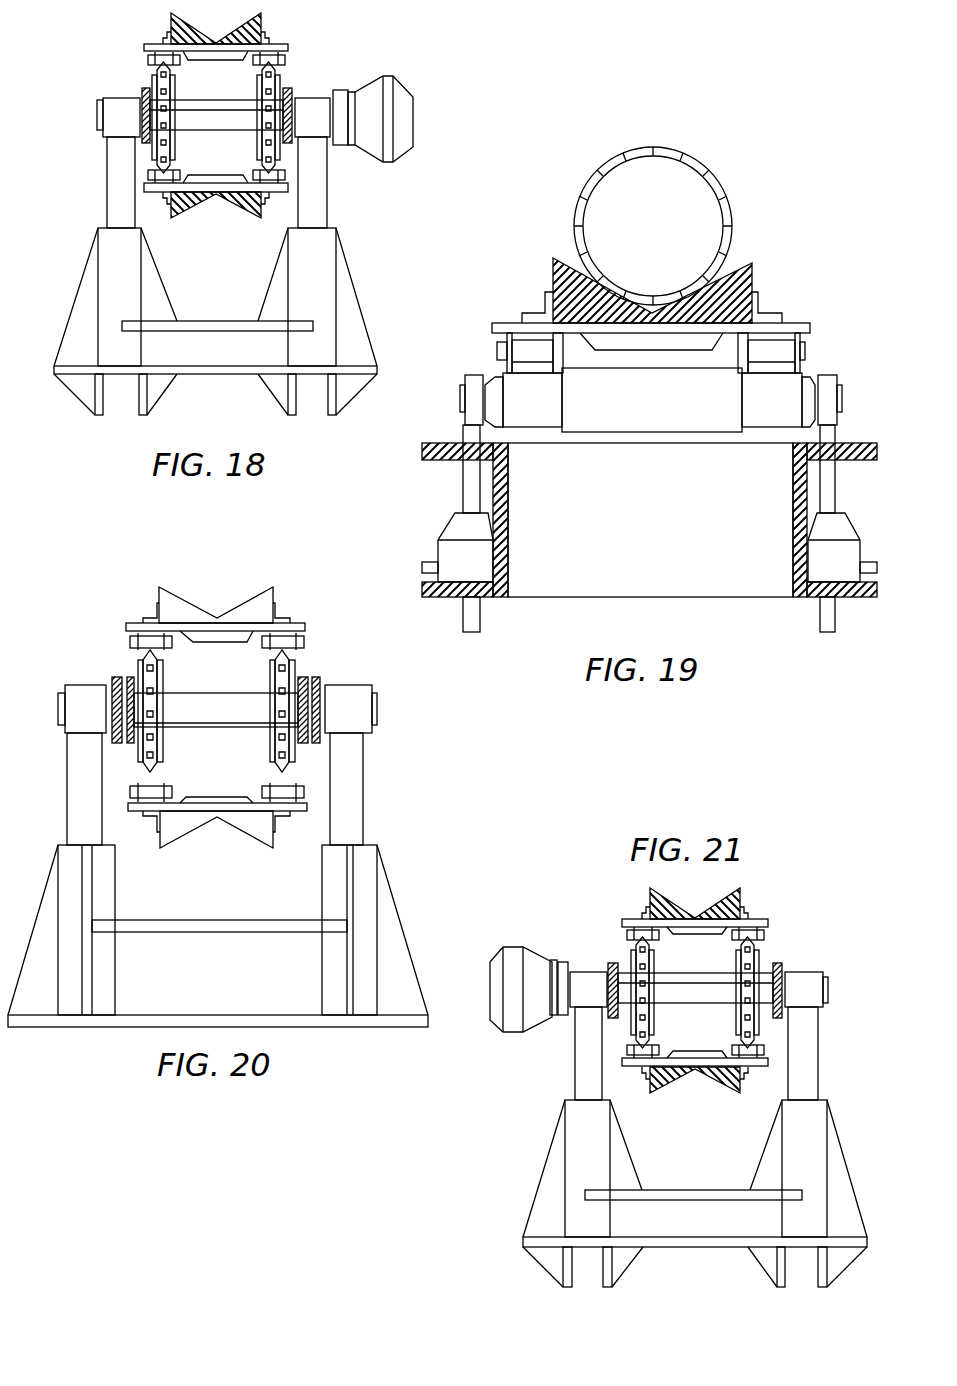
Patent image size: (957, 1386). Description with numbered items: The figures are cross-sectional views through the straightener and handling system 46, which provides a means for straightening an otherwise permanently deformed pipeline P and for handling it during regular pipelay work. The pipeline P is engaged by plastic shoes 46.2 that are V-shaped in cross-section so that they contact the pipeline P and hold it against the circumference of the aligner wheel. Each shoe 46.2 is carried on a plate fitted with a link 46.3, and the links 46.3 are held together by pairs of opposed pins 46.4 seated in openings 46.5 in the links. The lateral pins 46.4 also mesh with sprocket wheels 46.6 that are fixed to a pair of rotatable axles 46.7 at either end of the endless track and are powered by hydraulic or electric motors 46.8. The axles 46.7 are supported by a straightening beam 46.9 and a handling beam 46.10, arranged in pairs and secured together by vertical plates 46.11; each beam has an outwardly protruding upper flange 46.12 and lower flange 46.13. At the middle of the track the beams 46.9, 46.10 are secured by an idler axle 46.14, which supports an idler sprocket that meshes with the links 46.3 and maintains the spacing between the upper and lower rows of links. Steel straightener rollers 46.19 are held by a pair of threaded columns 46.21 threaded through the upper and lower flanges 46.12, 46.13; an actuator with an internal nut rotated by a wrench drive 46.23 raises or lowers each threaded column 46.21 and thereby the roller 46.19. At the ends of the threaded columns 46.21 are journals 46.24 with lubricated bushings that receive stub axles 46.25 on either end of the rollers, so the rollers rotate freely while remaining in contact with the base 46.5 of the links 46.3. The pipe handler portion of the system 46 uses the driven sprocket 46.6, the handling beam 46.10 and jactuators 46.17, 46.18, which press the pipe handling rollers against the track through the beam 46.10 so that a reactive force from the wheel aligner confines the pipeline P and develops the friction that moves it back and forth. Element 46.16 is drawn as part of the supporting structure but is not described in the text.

In FIG. 19, the pipeline P is at (712, 176).
In FIG. 18, the straightener and handling system 46 is at (342, 48).
In FIG. 20, the straightener and handling system 46 is at (297, 612).
In FIG. 18, the plastic shoes 46.2 is at (256, 22).
In FIG. 19, the plastic shoes 46.2 is at (738, 272).
In FIG. 20, the plastic shoes 46.2 is at (248, 608).
In FIG. 21, the plastic shoes 46.2 is at (718, 908).
In FIG. 18, the links 46.3 is at (281, 57).
In FIG. 19, the links 46.3 is at (507, 350).
In FIG. 20, the links 46.3 is at (302, 638).
In FIG. 21, the links 46.3 is at (763, 947).
In FIG. 19, the pins 46.4 is at (525, 350).
In FIG. 20, the pins 46.4 is at (290, 653).
In FIG. 19, the openings 46.5 is at (555, 375).
In FIG. 20, the sprocket wheels 46.6 is at (272, 770).
In FIG. 21, the sprocket wheels 46.6 is at (740, 957).
In FIG. 21, the rotatable axles 46.7 is at (827, 992).
In FIG. 18, the motors 46.8 is at (402, 100).
In FIG. 21, the motors 46.8 is at (500, 958).
In FIG. 18, the straightening beam 46.9 is at (260, 140).
In FIG. 19, the straightening beam 46.9 is at (497, 598).
In FIG. 21, the handling beam 46.10 is at (740, 1012).
In FIG. 19, the vertical plates 46.11 is at (593, 585).
In FIG. 19, the upper flange 46.12 is at (435, 462).
In FIG. 19, the lower flange 46.13 is at (432, 597).
In FIG. 20, the idler axle 46.14 is at (377, 713).
In FIG. 18, the support stand 46.16 is at (318, 190).
In FIG. 20, the jactuator 46.17 is at (362, 803).
In FIG. 21, the jactuator 46.18 is at (580, 1068).
In FIG. 19, the straightener rollers 46.19 is at (602, 433).
In FIG. 19, the threaded columns 46.21 is at (492, 328).
In FIG. 19, the wrench drive 46.23 is at (423, 567).
In FIG. 19, the journals 46.24 is at (470, 374).
In FIG. 19, the stub axles 46.25 is at (462, 405).